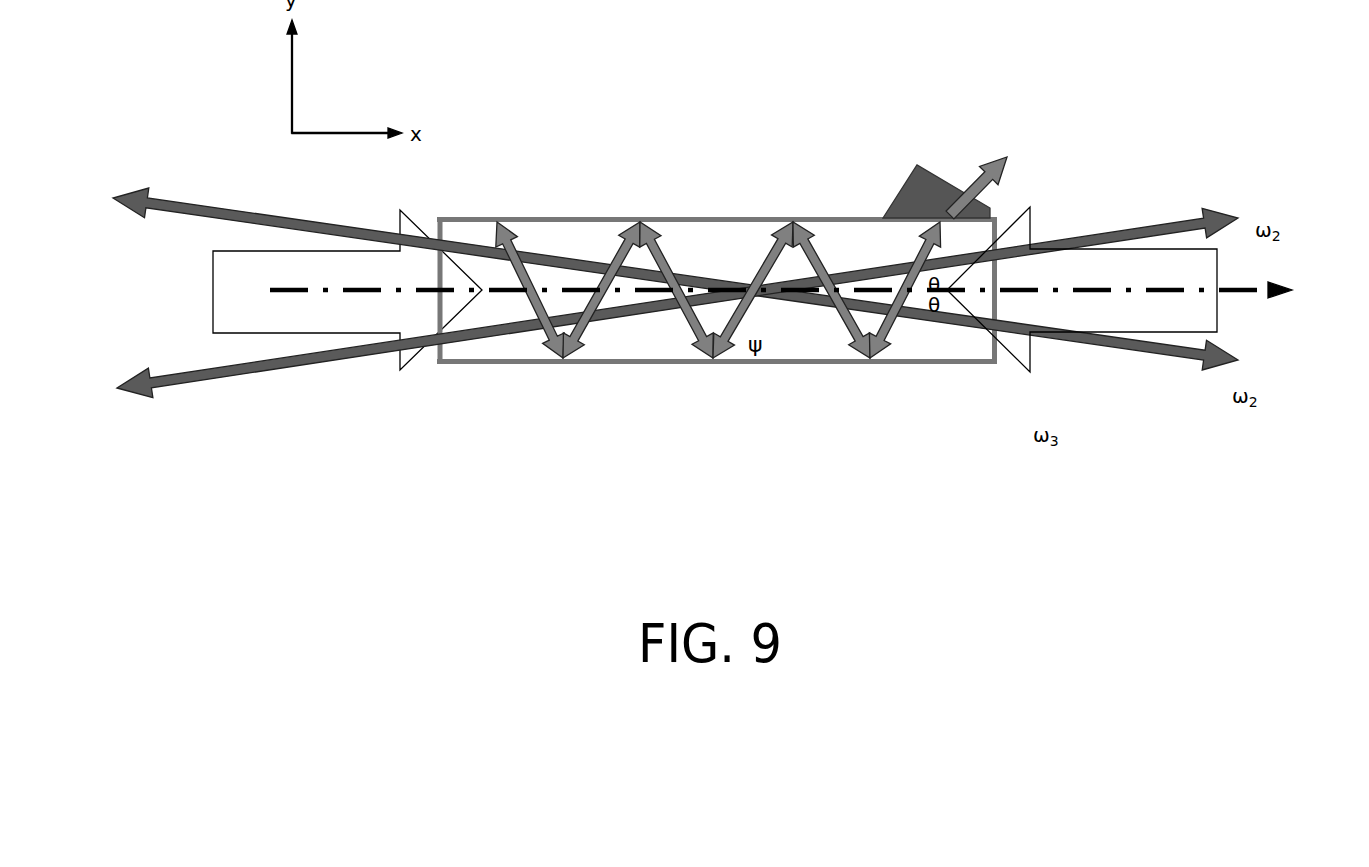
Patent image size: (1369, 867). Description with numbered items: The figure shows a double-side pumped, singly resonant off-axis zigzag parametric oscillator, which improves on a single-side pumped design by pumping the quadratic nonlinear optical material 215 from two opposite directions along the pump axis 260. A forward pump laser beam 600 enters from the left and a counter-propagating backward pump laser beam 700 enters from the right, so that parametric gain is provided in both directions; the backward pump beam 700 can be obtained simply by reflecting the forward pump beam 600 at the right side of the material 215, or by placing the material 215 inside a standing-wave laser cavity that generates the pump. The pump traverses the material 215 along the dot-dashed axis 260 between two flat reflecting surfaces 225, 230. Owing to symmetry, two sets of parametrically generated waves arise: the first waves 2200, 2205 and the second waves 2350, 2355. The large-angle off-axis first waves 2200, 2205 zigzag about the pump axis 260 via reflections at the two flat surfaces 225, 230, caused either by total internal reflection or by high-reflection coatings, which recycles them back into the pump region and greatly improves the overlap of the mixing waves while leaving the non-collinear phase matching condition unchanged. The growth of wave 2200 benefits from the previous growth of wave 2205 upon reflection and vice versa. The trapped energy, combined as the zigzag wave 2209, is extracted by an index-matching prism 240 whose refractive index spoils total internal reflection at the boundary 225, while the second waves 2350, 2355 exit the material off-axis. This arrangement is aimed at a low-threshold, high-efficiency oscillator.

The forward pump laser beam 600 is at (218, 282).
The quadratic nonlinear optical material 215 is at (468, 316).
The flat reflecting surface 225 is at (709, 204).
The flat reflecting surface 230 is at (795, 374).
The index-matching prism 240 is at (889, 179).
The parametrically generated first wave 2200 is at (605, 247).
The parametrically generated first wave 2205 is at (678, 327).
The zigzag wave 2209 is at (1021, 180).
The parametrically generated second wave 2350 is at (1204, 370).
The parametrically generated second wave 2355 is at (1199, 210).
The pump axis 260 is at (811, 289).
The backward pump laser beam 700 is at (1212, 305).